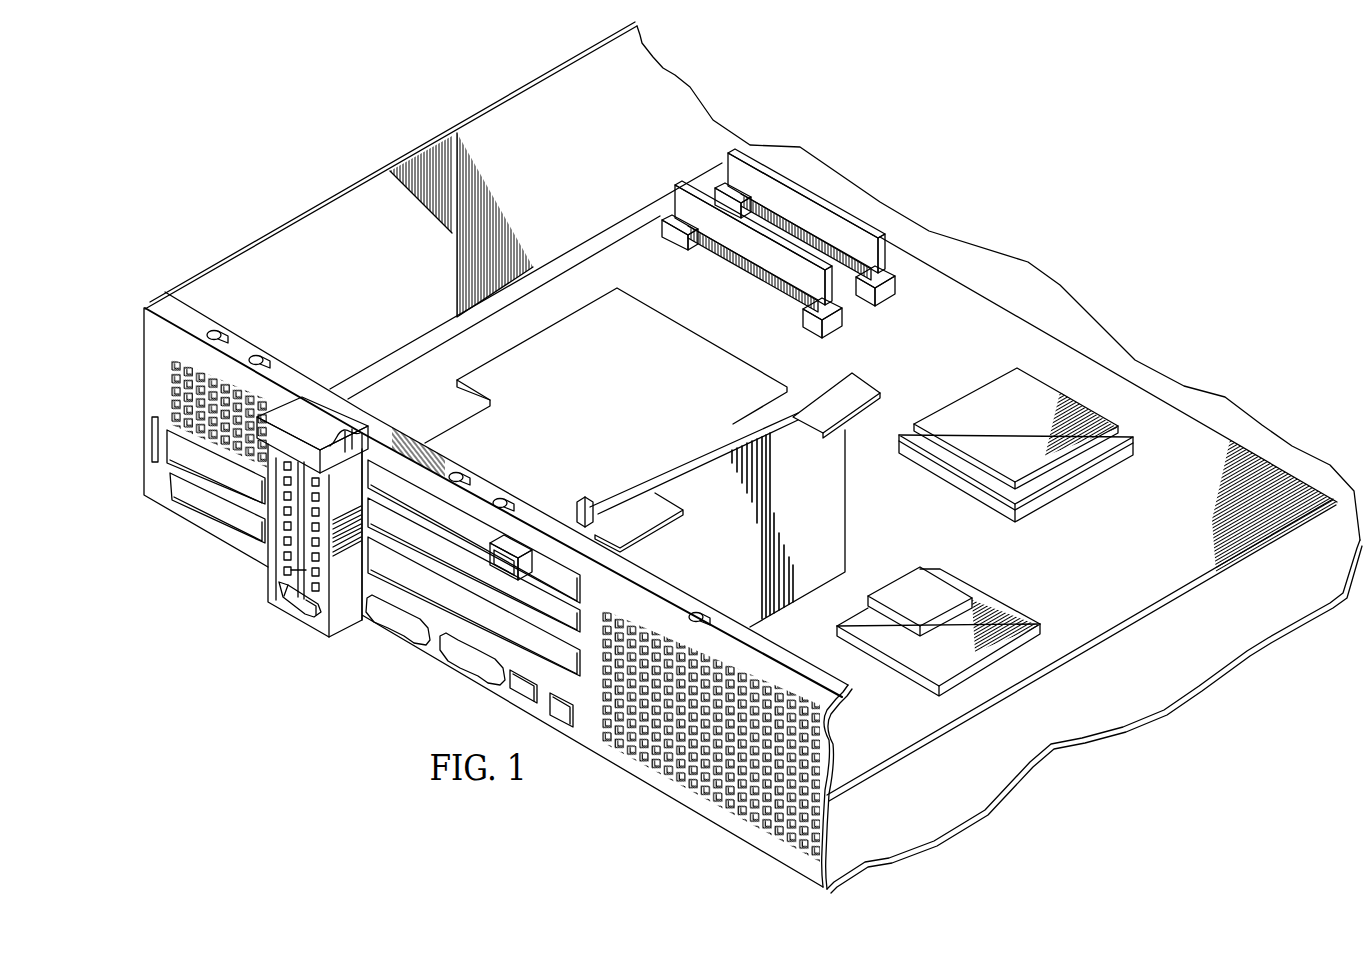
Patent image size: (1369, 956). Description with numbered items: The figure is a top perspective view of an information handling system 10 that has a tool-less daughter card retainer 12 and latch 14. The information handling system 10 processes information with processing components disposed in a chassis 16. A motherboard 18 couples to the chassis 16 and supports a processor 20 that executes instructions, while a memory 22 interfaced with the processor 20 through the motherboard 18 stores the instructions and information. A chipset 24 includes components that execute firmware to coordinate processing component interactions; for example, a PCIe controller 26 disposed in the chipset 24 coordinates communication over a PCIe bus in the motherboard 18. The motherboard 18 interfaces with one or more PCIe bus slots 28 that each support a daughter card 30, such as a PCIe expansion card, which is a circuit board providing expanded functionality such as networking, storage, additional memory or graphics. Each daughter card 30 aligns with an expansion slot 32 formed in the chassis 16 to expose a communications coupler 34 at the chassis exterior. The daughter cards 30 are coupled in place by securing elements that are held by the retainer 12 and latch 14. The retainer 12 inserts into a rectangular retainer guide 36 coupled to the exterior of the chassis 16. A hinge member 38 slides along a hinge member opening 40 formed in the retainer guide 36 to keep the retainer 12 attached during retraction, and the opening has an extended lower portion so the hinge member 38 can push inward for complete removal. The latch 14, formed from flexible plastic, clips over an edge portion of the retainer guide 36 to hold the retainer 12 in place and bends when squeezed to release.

The information handling system 10 is at (1016, 123).
The tool-less daughter card retainer 12 is at (288, 476).
The latch 14 is at (315, 420).
The chassis 16 is at (297, 255).
The motherboard 18 is at (1024, 341).
The processor 20 is at (983, 394).
The memory 22 is at (737, 177).
The chipset 24 is at (987, 602).
The PCIe controller 26 is at (903, 588).
The PCIe bus slot 28 is at (677, 467).
The daughter card 30 is at (653, 323).
The expansion slot 32 is at (440, 590).
The communications coupler 34 is at (512, 552).
The retainer guide 36 is at (275, 538).
The hinge member 38 is at (290, 606).
The hinge member opening 40 is at (306, 567).